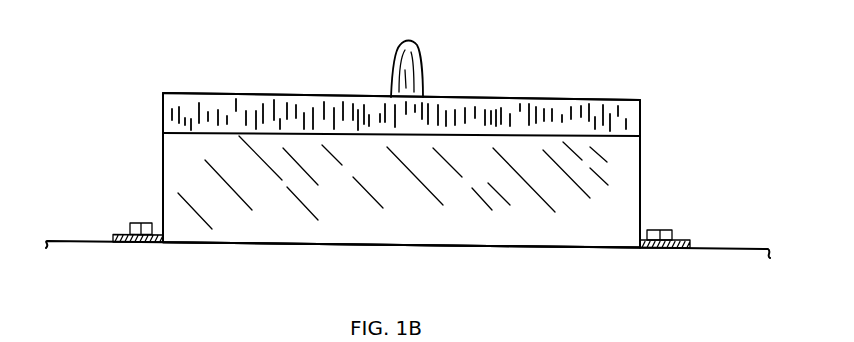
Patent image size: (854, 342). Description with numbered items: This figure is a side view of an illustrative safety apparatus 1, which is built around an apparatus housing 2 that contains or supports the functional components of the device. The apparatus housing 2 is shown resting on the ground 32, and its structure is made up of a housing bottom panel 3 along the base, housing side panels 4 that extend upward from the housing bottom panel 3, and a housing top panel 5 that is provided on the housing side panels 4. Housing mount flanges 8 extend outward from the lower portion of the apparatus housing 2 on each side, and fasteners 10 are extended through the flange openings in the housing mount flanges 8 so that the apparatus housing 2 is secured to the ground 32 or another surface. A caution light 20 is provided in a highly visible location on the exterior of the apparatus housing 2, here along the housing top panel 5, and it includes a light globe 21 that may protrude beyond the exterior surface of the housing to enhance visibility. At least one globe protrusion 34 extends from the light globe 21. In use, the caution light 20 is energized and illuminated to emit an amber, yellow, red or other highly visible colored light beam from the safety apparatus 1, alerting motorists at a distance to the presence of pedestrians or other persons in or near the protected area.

The safety apparatus 1 is at (93, 90).
The apparatus housing 2 is at (162, 155).
The housing bottom panel 3 is at (242, 246).
The housing side panels 4 is at (162, 192).
The housing top panel 5 is at (229, 132).
The housing mount flanges 8 is at (112, 234).
The fasteners 10 is at (143, 222).
The caution light 20 is at (362, 90).
The light globe 21 is at (542, 110).
The ground 32 is at (750, 249).
The globe protrusion 34 is at (407, 82).